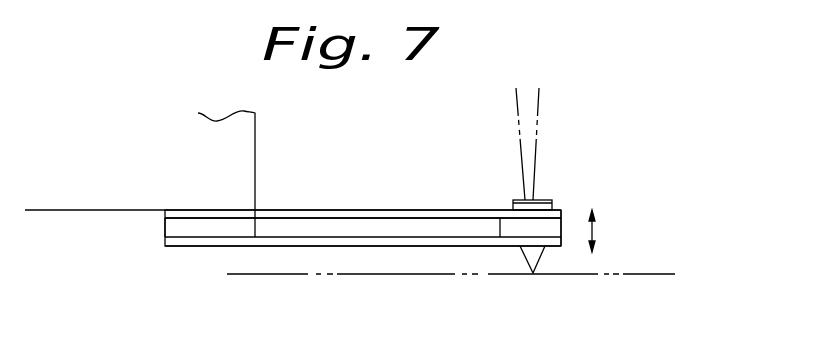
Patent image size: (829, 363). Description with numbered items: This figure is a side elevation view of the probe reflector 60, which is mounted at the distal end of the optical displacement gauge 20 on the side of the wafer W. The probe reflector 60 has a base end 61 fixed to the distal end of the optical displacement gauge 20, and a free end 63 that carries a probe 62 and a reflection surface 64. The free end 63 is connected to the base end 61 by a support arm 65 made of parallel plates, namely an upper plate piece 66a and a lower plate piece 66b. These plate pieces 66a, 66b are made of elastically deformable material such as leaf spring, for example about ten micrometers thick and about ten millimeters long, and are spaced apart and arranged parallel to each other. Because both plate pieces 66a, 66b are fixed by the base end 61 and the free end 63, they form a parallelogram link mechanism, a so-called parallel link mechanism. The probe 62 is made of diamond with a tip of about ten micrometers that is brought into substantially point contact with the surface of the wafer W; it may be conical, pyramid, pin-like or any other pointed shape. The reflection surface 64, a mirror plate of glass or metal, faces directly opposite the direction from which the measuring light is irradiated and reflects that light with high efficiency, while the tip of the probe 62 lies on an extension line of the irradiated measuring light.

The optical displacement gauge 20 is at (186, 162).
The probe reflector 60 is at (363, 203).
The base end 61 is at (172, 229).
The probe 62 is at (540, 262).
The free end 63 is at (562, 212).
The reflection surface 64 is at (543, 200).
The support arm 65 is at (412, 208).
The upper plate piece 66a is at (460, 208).
The lower plate piece 66b is at (437, 247).
The wafer W is at (640, 273).